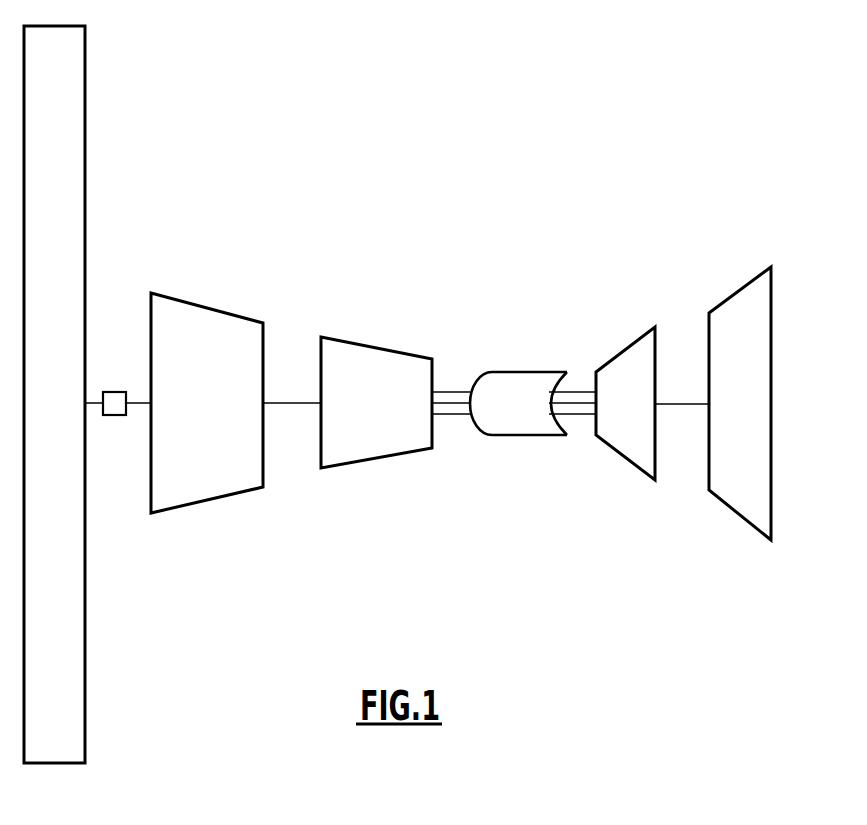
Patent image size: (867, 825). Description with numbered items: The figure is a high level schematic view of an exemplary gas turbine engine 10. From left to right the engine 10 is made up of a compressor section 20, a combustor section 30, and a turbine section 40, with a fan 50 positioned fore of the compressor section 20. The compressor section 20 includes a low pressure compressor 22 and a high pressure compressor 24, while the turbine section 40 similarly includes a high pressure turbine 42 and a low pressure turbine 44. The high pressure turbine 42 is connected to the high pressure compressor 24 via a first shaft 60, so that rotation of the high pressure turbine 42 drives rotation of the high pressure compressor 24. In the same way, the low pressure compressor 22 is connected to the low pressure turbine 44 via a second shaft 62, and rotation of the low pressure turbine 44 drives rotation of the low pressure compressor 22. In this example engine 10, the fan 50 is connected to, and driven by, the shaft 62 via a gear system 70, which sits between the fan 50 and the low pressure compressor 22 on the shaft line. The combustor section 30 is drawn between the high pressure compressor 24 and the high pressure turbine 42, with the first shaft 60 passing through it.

The gas turbine engine 10 is at (490, 108).
The compressor section 20 is at (432, 243).
The low pressure compressor 22 is at (197, 505).
The high pressure compressor 24 is at (370, 463).
The combustor section 30 is at (515, 372).
The turbine section 40 is at (772, 243).
The high pressure turbine 42 is at (620, 456).
The low pressure turbine 44 is at (738, 515).
The fan 50 is at (85, 88).
The first shaft 60 is at (452, 415).
The second shaft 62 is at (287, 405).
The gear system 70 is at (113, 415).